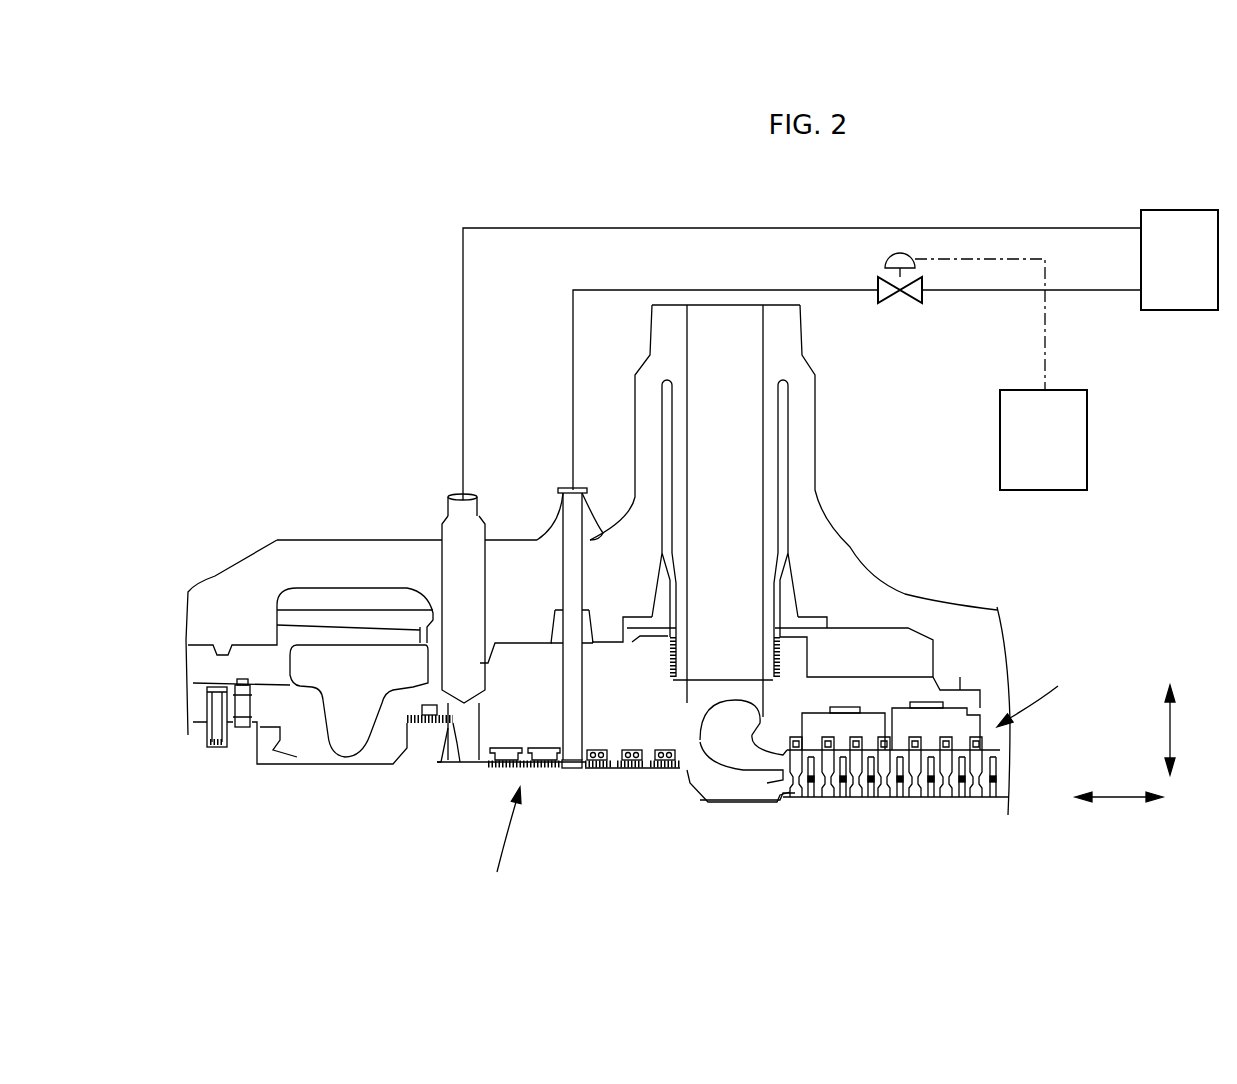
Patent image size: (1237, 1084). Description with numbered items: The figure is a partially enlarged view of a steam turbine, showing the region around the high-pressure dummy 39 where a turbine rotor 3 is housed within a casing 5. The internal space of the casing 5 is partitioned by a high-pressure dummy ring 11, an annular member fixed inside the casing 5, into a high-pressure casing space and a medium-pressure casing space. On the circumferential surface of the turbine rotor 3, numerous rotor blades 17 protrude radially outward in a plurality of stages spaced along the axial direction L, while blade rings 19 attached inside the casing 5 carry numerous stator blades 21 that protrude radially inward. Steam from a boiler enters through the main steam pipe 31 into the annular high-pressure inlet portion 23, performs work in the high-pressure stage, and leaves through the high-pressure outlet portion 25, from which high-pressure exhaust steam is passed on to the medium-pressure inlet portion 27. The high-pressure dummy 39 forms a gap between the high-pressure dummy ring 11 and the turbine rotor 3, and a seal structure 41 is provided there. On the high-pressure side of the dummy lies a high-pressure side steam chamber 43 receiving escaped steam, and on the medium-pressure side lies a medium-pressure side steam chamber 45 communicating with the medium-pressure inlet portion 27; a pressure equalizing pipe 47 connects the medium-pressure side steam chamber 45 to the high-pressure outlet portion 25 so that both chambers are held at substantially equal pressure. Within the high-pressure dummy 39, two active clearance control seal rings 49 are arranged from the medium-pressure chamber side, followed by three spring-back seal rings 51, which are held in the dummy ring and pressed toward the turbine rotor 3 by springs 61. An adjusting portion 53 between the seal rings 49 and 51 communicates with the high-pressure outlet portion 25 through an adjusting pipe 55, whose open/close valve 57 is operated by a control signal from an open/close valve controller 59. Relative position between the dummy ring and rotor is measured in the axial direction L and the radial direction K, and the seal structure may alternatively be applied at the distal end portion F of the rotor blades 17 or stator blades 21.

The turbine rotor 3 is at (989, 808).
The casing 5 is at (305, 540).
The high-pressure dummy ring 11 is at (528, 658).
The rotor blades 17 is at (978, 757).
The blade rings 19 is at (955, 710).
The stator blades 21 is at (975, 747).
The high-pressure inlet portion 23 is at (737, 732).
The high-pressure outlet portion 25 is at (1180, 210).
The medium-pressure inlet portion 27 is at (320, 715).
The main steam pipe 31 is at (800, 330).
The high-pressure dummy 39 is at (488, 763).
The seal structure 41 is at (502, 845).
The high-pressure side steam chamber 43 is at (705, 790).
The medium-pressure side steam chamber 45 is at (457, 760).
The pressure equalizing pipe 47 is at (450, 505).
The active clearance control seal rings 49 is at (503, 750).
The spring-back seal rings 51 is at (660, 770).
The adjusting portion 53 is at (575, 768).
The adjusting pipe 55 is at (573, 382).
The open/close valve 57 is at (912, 305).
The open/close valve controller 59 is at (1087, 437).
The springs 61 is at (601, 750).
The distal end portion F is at (1030, 691).
The radial direction K is at (1183, 730).
The axial direction L is at (1119, 812).